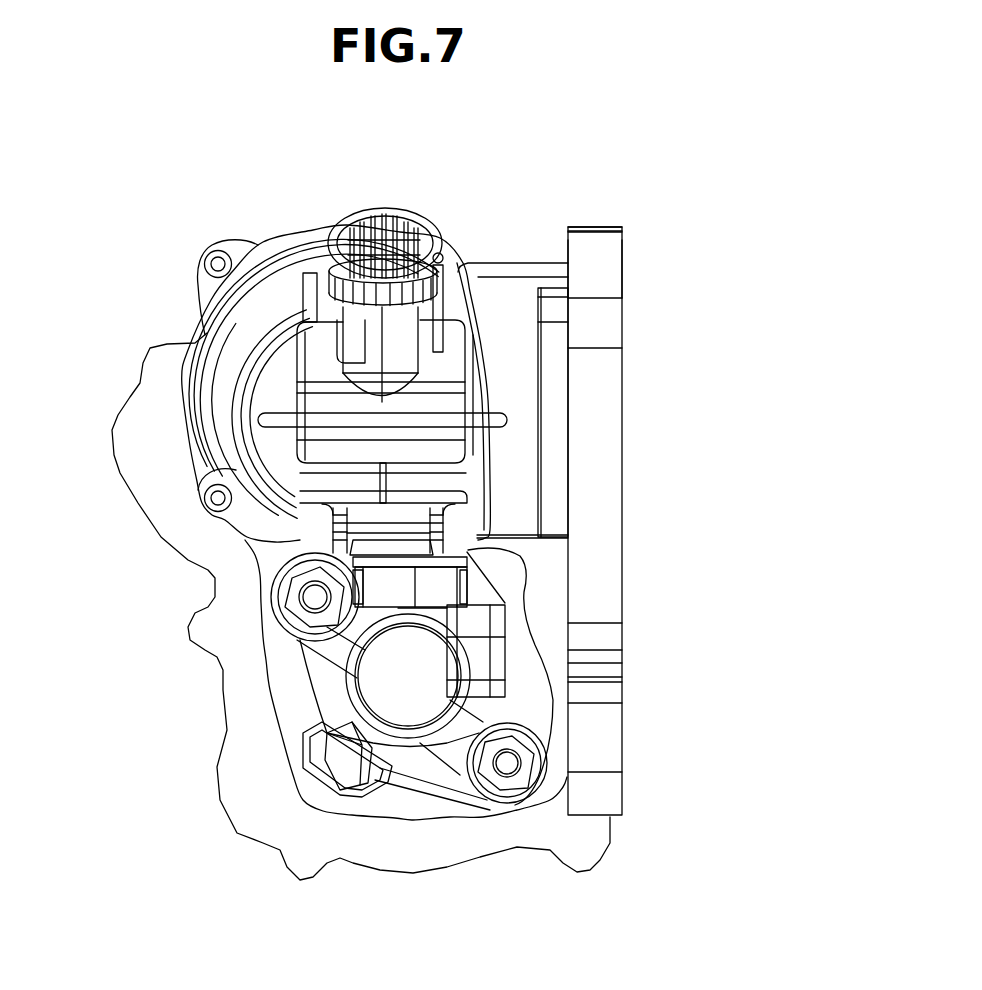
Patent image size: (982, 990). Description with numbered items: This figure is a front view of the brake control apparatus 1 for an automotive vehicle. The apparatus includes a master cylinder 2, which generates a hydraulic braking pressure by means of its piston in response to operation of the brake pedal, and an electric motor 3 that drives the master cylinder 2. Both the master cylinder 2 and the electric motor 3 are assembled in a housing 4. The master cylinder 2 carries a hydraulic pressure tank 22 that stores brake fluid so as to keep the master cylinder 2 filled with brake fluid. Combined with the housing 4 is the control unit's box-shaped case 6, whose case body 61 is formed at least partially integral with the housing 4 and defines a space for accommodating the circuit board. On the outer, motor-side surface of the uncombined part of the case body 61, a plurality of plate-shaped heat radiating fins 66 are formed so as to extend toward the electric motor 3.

The brake hydraulic pressure control device 1 is at (168, 224).
The master cylinder 2 is at (350, 690).
The electric motor 3 is at (200, 330).
The housing 4 is at (262, 243).
The hydraulic pressure tank 22 is at (300, 358).
The case 6 is at (644, 478).
The case body 61 is at (593, 238).
The heat radiating fins 66 is at (553, 292).